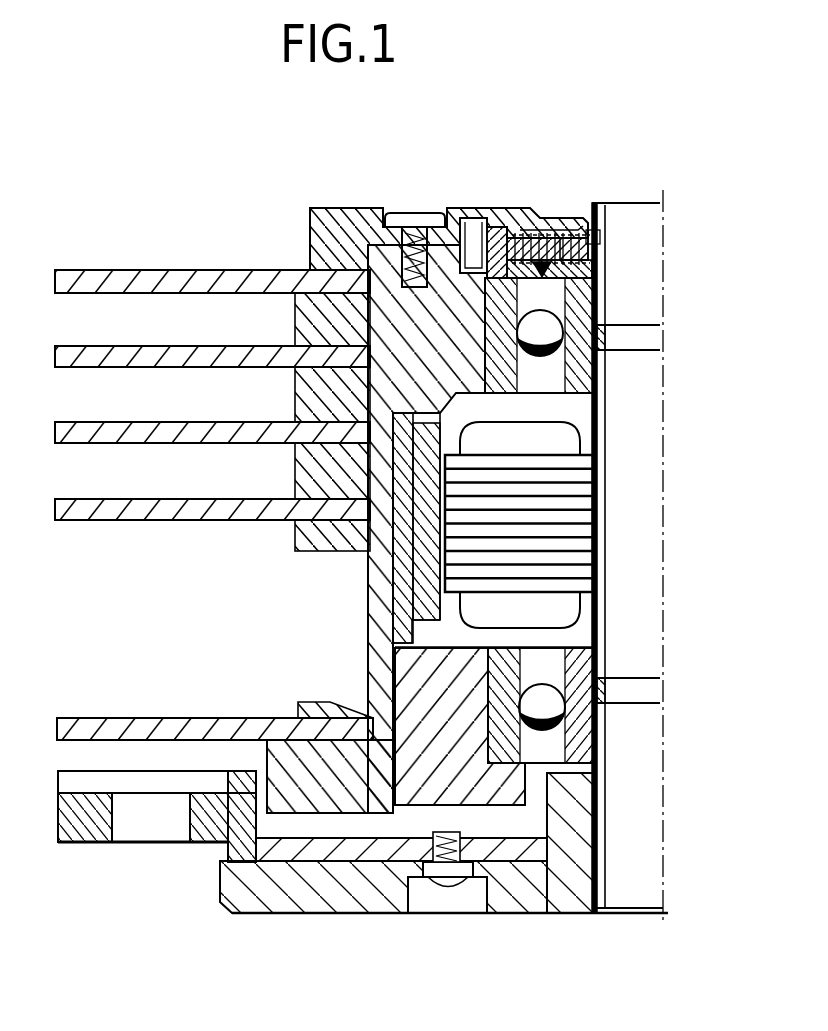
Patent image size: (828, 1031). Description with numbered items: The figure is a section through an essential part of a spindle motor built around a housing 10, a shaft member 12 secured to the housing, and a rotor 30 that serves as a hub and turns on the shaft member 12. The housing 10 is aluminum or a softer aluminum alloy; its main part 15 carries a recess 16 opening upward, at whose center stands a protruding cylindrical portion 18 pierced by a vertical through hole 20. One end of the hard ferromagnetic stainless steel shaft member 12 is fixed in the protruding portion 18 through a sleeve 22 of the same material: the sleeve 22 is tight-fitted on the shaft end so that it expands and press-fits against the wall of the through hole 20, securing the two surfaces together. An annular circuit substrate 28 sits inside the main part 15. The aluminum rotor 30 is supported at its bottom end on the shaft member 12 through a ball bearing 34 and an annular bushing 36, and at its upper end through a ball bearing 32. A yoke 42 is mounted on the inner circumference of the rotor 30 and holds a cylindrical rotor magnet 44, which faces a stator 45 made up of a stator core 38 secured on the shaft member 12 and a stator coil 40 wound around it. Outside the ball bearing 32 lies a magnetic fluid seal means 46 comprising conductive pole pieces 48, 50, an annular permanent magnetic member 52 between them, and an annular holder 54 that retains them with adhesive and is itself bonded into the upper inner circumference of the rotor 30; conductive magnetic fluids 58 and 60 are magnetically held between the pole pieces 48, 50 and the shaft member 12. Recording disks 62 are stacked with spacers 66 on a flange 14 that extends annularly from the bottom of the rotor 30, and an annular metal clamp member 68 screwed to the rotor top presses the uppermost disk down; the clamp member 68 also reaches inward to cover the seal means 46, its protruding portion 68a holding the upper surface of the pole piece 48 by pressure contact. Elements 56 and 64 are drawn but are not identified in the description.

The housing 10 is at (531, 915).
The shaft member 12 is at (650, 878).
The flange 14 is at (92, 832).
The main part 15 is at (320, 895).
The recess 16 is at (497, 818).
The protruding cylindrical portion 18 is at (535, 840).
The through hole 20 is at (568, 875).
The sleeve 22 is at (575, 912).
The annular circuit substrate 28 is at (378, 855).
The rotor 30 is at (383, 620).
The ball bearing 32 is at (580, 363).
The ball bearing 34 is at (580, 670).
The annular bushing 36 is at (427, 683).
The stator core 38 is at (573, 487).
The stator coil 40 is at (557, 440).
The yoke 42 is at (407, 572).
The rotor magnet 44 is at (430, 592).
The stator 45 is at (582, 610).
The magnetic fluid seal means 46 is at (592, 290).
The pole piece 48 is at (563, 234).
The pole piece 50 is at (594, 307).
The annular permanent magnetic member 52 is at (594, 333).
The annular holder 54 is at (475, 220).
The sleeve 56 is at (490, 218).
The conductive magnetic fluid 58 is at (596, 240).
The conductive magnetic fluid 60 is at (594, 260).
The recording disks 62 is at (160, 282).
The block 64 is at (293, 777).
The spacers 66 is at (298, 320).
The clamp member 68 is at (343, 208).
The protruding portion 68a is at (545, 218).